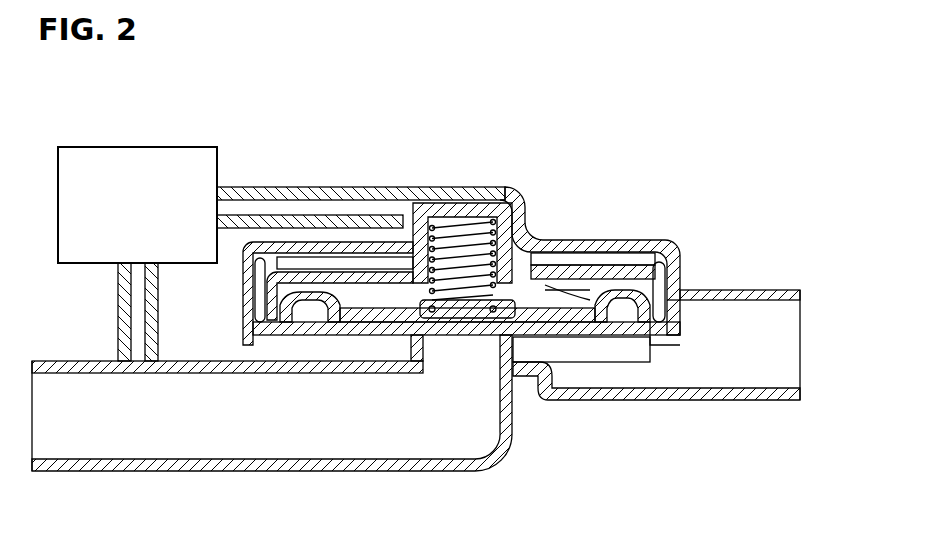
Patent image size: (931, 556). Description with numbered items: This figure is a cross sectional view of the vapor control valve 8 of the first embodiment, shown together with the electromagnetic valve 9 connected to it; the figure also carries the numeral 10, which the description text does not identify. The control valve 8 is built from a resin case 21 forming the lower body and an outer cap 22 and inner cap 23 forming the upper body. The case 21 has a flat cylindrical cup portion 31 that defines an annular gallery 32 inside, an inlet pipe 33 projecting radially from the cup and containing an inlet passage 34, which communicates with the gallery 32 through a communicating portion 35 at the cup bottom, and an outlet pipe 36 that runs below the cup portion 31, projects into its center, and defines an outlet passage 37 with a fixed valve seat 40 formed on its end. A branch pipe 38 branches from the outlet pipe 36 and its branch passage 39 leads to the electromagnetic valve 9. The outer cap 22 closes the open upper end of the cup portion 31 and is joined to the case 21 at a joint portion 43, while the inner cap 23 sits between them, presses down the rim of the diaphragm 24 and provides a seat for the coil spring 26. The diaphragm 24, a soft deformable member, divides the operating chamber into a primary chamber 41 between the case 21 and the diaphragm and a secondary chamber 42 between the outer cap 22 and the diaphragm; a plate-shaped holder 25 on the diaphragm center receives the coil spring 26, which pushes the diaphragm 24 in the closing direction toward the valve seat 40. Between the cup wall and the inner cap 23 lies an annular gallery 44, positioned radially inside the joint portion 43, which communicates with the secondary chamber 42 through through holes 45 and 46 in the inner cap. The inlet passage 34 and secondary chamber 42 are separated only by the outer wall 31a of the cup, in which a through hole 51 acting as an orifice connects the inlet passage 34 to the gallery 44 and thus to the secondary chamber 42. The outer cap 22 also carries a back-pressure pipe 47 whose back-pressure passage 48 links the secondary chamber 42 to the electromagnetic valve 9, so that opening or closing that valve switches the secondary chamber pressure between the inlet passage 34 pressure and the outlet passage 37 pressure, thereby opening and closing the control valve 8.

The control valve 8 is at (760, 190).
The electromagnetic valve 9 is at (218, 162).
The spring 10 is at (458, 200).
The case 21 is at (775, 291).
The outer cap 22 is at (496, 195).
The inner cap 23 is at (540, 255).
The diaphragm 24 is at (598, 282).
The holder 25 is at (570, 268).
The coil spring 26 is at (436, 218).
The cup portion 31 is at (232, 345).
The outer wall 31a is at (694, 360).
The gallery 32 is at (573, 352).
The inlet pipe 33 is at (786, 401).
The inlet passage 34 is at (740, 350).
The communicating portion 35 is at (593, 362).
The outlet pipe 36 is at (289, 472).
The outlet passage 37 is at (353, 413).
The branch pipe 38 is at (118, 352).
The branch passage 39 is at (150, 352).
The fixed valve seat 40 is at (474, 338).
The primary chamber 41 is at (650, 292).
The secondary chamber 42 is at (622, 292).
The joint portion 43 is at (684, 258).
The annular gallery 44 is at (686, 283).
The through hole 45 is at (688, 247).
The through hole 46 is at (383, 245).
The back-pressure pipe 47 is at (330, 188).
The back-pressure passage 48 is at (268, 212).
The through hole 51 is at (712, 335).